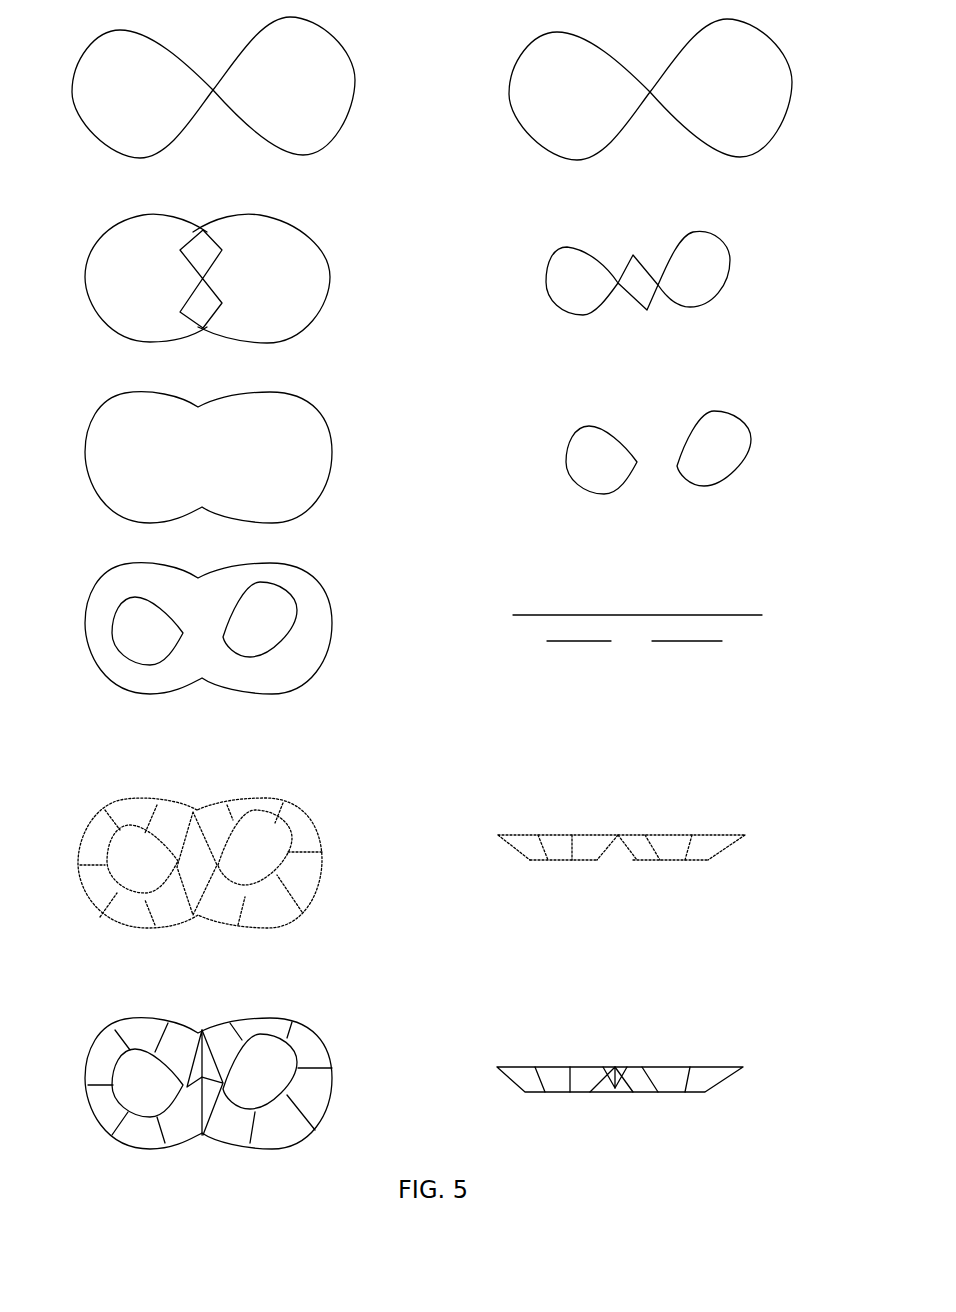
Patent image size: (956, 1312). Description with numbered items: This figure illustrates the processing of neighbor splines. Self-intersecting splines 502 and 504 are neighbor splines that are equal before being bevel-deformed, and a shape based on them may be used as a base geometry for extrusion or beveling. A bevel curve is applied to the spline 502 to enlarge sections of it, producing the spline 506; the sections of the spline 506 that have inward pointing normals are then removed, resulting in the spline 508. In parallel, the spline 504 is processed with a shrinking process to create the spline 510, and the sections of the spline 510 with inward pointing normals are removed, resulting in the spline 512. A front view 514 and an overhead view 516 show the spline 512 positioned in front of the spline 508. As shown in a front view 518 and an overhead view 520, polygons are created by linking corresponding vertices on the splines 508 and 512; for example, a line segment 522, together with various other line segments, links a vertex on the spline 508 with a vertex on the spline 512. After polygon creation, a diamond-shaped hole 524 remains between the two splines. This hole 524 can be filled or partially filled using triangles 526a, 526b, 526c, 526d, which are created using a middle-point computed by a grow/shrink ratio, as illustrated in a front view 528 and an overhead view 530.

The self-intersecting spline 502 is at (90, 46).
The self-intersecting spline 504 is at (527, 48).
The spline 506 is at (99, 242).
The spline 508 is at (113, 407).
The spline 510 is at (548, 282).
The spline 512 is at (750, 400).
The front view 514 is at (73, 565).
The overhead view 516 is at (772, 563).
The front view 518 is at (70, 795).
The overhead view 520 is at (772, 777).
The line segment 522 is at (120, 827).
The diamond-shaped hole 524 is at (193, 855).
The triangle 526a is at (212, 1070).
The triangle 526b is at (223, 1087).
The triangle 526c is at (197, 1095).
The triangle 526d is at (213, 1097).
The front view 528 is at (72, 1022).
The overhead view 530 is at (762, 1013).